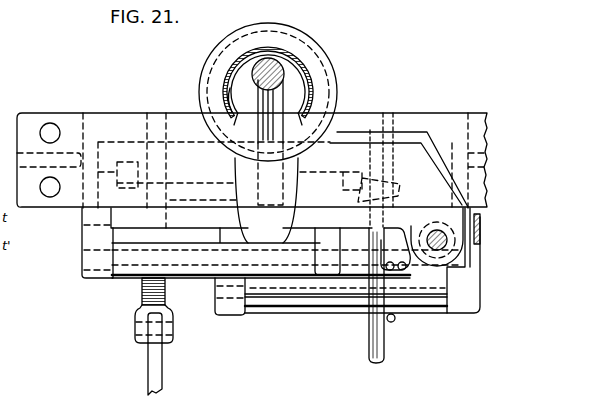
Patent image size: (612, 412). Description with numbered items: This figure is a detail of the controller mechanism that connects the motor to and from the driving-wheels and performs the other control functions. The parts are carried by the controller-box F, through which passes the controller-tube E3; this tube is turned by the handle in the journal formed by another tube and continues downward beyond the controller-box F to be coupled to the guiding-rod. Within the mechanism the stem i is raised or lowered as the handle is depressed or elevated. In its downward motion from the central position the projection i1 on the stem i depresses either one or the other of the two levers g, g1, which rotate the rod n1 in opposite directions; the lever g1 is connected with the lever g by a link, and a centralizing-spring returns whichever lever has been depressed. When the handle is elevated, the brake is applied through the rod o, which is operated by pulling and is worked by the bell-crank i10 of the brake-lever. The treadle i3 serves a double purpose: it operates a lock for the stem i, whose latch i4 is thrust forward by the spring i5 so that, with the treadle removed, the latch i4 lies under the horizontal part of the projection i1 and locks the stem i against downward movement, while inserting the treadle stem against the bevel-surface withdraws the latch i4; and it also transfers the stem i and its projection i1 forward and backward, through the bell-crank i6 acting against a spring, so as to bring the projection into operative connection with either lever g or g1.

The controller-box F is at (252, 159).
The stem i is at (289, 56).
The projection i1 is at (263, 100).
The controller-tube E3 is at (258, 131).
The lever g is at (285, 215).
The lever g1 is at (141, 229).
The treadle i3 is at (420, 247).
The latch i4 is at (388, 140).
The spring i5 is at (480, 240).
The bell-crank i6 is at (331, 309).
The bell-crank i10 is at (142, 293).
The rod n1 is at (384, 351).
The rod o is at (162, 378).